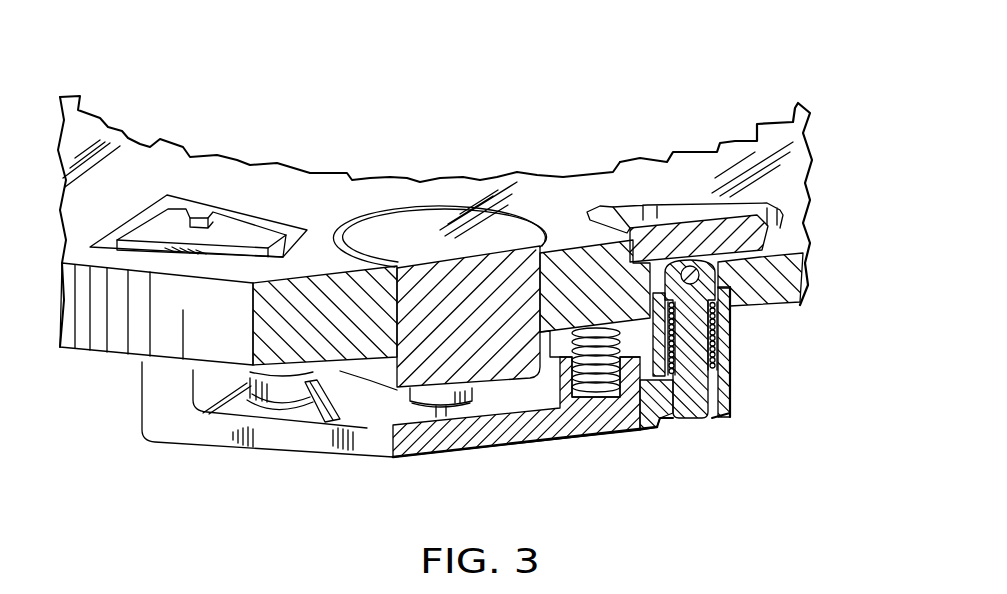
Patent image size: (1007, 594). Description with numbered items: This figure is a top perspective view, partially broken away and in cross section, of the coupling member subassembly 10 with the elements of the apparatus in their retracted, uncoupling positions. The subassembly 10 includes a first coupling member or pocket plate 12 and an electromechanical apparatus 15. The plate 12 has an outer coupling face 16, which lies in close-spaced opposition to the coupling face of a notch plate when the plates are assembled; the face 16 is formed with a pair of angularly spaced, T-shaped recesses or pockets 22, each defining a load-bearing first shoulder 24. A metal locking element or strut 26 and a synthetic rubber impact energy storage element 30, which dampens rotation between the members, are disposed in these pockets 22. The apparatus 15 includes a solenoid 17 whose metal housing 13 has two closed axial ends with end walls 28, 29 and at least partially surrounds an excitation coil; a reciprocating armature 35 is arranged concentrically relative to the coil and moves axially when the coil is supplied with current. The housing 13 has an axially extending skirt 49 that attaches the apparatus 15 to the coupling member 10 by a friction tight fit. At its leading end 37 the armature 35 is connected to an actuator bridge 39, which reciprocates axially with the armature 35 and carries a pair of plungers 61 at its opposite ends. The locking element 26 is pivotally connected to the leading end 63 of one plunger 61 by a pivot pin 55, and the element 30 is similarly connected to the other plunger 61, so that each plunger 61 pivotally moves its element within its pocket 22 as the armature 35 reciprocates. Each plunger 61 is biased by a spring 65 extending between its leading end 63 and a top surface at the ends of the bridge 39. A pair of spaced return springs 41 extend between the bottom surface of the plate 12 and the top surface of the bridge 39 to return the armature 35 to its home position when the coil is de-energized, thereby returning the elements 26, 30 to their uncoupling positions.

The coupling member subassembly 10 is at (578, 58).
The first coupling member 12 is at (583, 163).
The housing 13 is at (430, 198).
The electromechanical apparatus 15 is at (555, 453).
The coupling face 16 is at (787, 182).
The solenoid 17 is at (405, 178).
The T-shaped recess 22 is at (293, 235).
The load-bearing first shoulder 24 is at (148, 225).
The locking element 26 is at (685, 208).
The end wall 28 is at (417, 235).
The end wall 29 is at (496, 392).
The impact energy storage element 30 is at (230, 213).
The armature 35 is at (437, 424).
The leading end 37 is at (456, 410).
The actuator bridge 39 is at (254, 460).
The return spring 41 is at (621, 378).
The skirt 49 is at (395, 318).
The pivot pin 55 is at (705, 278).
The plunger 61 is at (693, 424).
The leading end 63 is at (730, 313).
The spring 65 is at (712, 345).